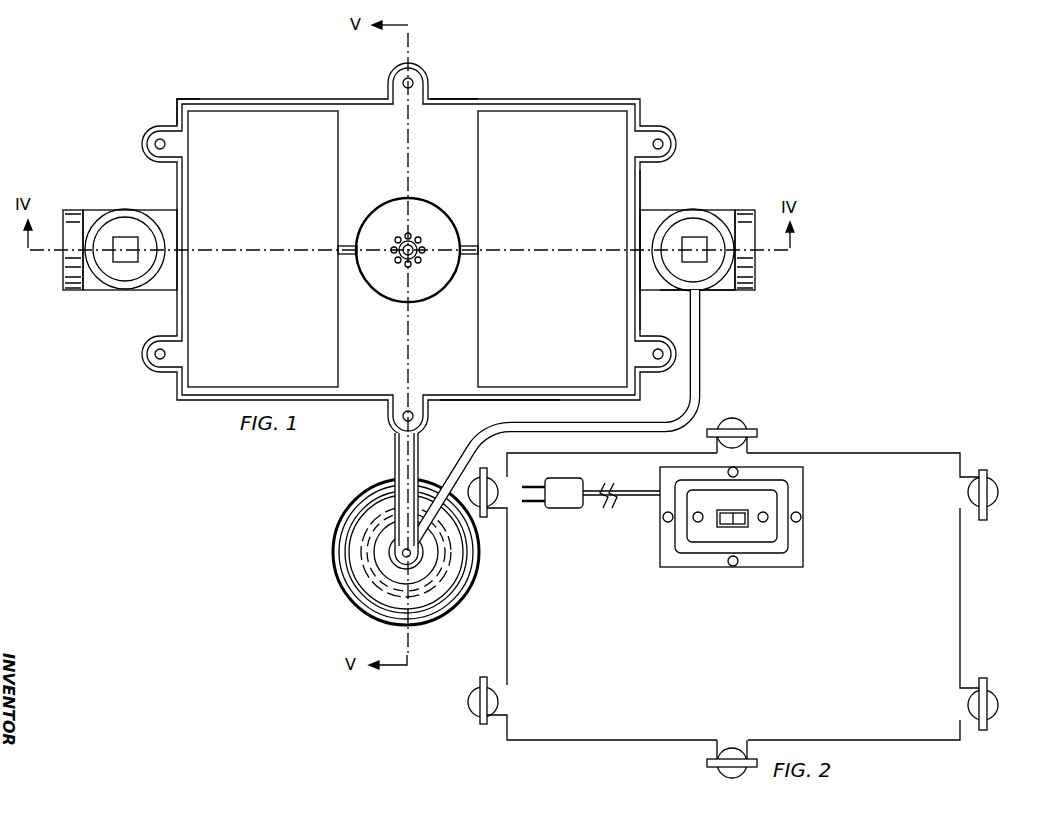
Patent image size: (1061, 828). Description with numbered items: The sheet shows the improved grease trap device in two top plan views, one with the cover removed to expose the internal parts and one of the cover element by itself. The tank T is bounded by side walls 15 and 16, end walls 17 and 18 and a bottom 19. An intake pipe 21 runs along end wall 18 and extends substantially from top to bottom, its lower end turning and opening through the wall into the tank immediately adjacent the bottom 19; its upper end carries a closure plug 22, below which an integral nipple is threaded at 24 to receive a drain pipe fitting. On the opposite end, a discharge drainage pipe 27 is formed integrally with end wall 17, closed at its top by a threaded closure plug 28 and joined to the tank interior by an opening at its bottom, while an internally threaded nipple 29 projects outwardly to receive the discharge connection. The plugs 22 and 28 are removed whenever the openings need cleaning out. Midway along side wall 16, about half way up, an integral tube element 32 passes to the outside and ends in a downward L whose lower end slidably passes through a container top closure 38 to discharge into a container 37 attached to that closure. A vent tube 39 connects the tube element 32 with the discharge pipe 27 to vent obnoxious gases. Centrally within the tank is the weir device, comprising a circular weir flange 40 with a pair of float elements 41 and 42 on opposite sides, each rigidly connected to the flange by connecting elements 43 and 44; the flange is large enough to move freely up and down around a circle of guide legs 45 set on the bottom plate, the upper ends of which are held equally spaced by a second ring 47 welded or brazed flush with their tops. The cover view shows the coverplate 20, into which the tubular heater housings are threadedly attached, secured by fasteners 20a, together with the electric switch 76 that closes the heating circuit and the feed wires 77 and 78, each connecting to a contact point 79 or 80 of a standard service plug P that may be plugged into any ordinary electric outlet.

In FIG. 1, the side wall 15 is at (326, 82).
In FIG. 1, the side wall 16 is at (530, 402).
In FIG. 1, the end wall 17 is at (645, 118).
In FIG. 1, the end wall 18 is at (175, 112).
In FIG. 1, the bottom 19 is at (445, 115).
In FIG. 2, the coverplate 20 is at (875, 453).
In FIG. 2, the fastening clips 20a is at (748, 428).
In FIG. 1, the intake pipe 21 is at (80, 291).
In FIG. 1, the closure plug 22 is at (138, 238).
In FIG. 1, the threads 24 is at (80, 210).
In FIG. 1, the discharge drainage pipe 27 is at (715, 291).
In FIG. 1, the closure plug 28 is at (700, 234).
In FIG. 1, the nipple 29 is at (748, 291).
In FIG. 1, the tube element 32 is at (395, 454).
In FIG. 1, the container 37 is at (333, 555).
In FIG. 1, the container top closure 38 is at (365, 540).
In FIG. 1, the vent tube 39 is at (703, 352).
In FIG. 1, the weir flange 40 is at (414, 200).
In FIG. 1, the float element 41 is at (571, 111).
In FIG. 1, the float element 42 is at (262, 111).
In FIG. 1, the connecting element 43 is at (356, 246).
In FIG. 1, the connecting element 44 is at (470, 243).
In FIG. 1, the guide legs 45 is at (424, 238).
In FIG. 1, the second ring 47 is at (402, 257).
In FIG. 2, the electric switch 76 is at (712, 553).
In FIG. 2, the wire 77 is at (645, 490).
In FIG. 2, the wire 78 is at (612, 503).
In FIG. 2, the contact point 79 is at (538, 486).
In FIG. 2, the contact point 80 is at (540, 503).
In FIG. 2, the service plug P is at (575, 487).